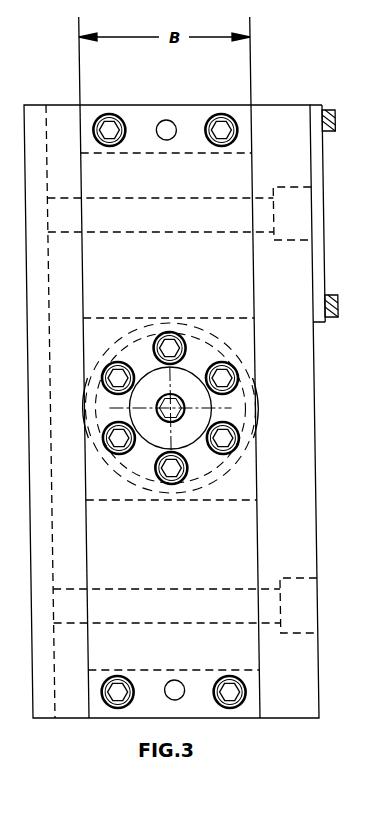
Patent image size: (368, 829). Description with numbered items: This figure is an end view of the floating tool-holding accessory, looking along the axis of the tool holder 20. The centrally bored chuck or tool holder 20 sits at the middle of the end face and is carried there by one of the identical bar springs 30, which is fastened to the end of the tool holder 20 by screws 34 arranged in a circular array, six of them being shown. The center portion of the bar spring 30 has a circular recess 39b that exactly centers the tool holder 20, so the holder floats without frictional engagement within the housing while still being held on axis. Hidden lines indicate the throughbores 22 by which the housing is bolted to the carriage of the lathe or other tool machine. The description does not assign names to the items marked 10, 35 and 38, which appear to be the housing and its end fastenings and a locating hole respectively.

The tool holder body 10 is at (318, 179).
The mounting bolts 35 is at (109, 128).
The tool holder 20 is at (193, 330).
The circular recess 39b is at (214, 339).
The screws 34 is at (195, 408).
The bar springs 30 is at (166, 540).
The throughbores 22 is at (174, 608).
The dowel hole 38 is at (166, 688).